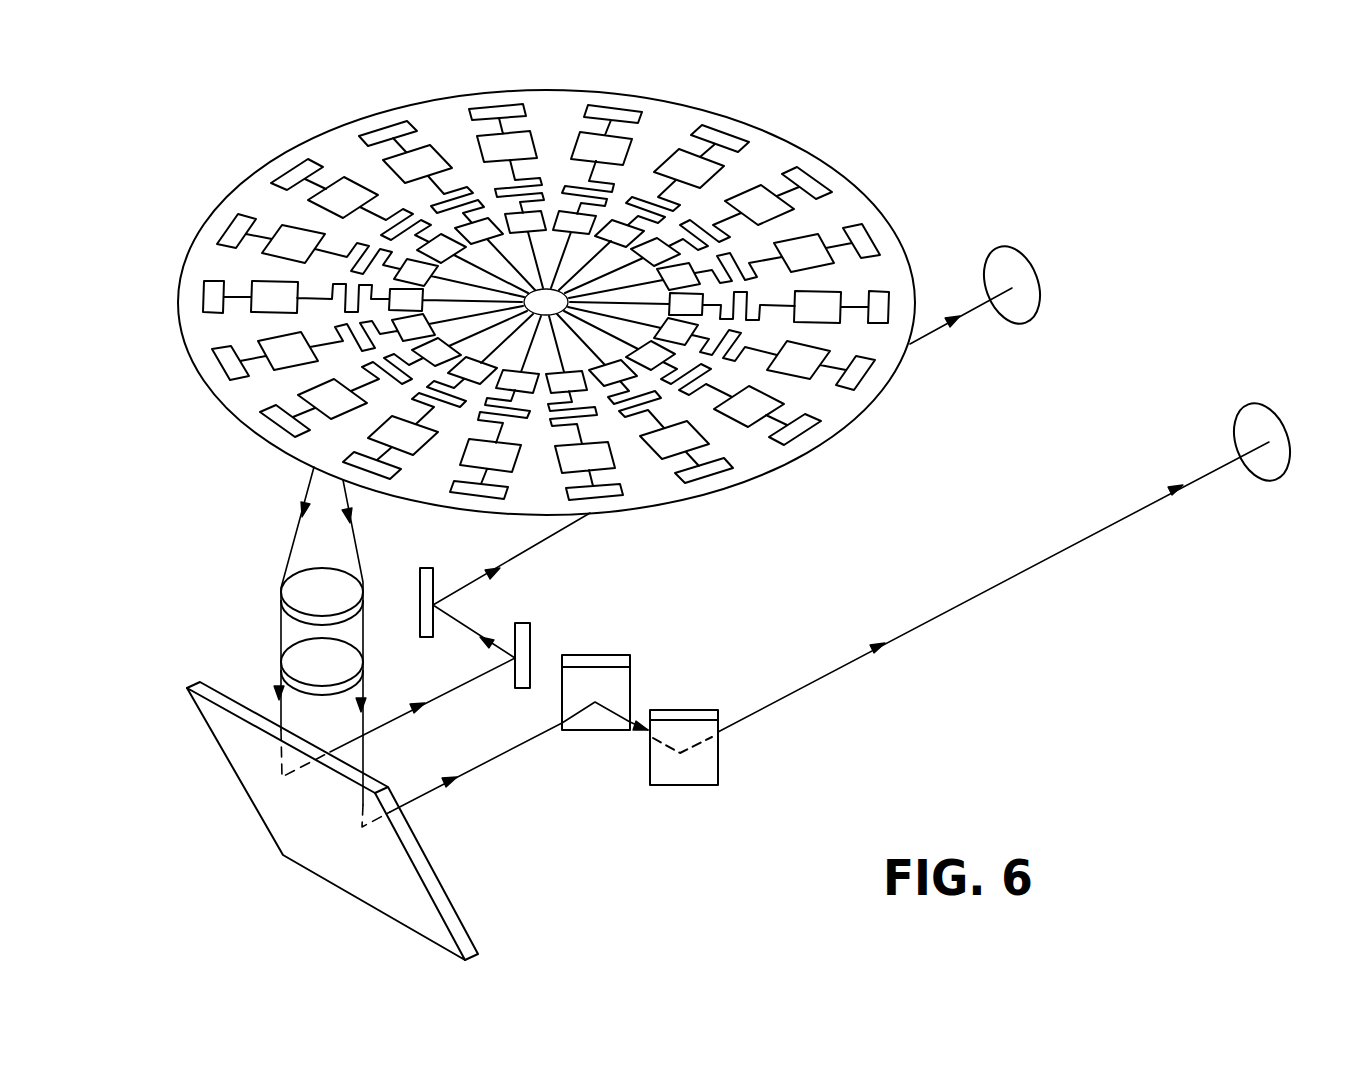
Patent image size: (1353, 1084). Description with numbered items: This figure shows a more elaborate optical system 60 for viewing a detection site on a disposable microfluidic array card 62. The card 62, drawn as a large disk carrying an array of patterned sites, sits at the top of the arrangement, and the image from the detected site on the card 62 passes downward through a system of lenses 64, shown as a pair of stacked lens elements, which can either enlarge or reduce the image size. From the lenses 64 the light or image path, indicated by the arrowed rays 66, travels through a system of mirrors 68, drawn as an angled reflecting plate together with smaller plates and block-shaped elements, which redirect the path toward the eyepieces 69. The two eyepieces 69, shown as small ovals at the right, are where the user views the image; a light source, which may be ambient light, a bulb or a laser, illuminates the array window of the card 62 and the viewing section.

The optical system 60 is at (683, 867).
The card 62 is at (773, 162).
The system of lenses 64 is at (250, 623).
The light beam 66 is at (292, 542).
The system of mirrors 68 is at (627, 820).
The eyepieces 69 is at (1235, 407).